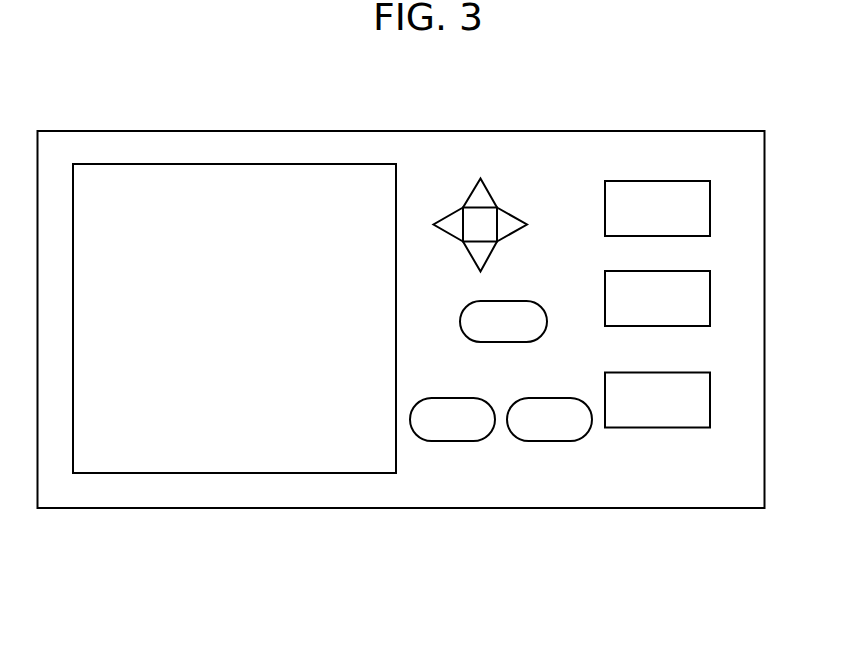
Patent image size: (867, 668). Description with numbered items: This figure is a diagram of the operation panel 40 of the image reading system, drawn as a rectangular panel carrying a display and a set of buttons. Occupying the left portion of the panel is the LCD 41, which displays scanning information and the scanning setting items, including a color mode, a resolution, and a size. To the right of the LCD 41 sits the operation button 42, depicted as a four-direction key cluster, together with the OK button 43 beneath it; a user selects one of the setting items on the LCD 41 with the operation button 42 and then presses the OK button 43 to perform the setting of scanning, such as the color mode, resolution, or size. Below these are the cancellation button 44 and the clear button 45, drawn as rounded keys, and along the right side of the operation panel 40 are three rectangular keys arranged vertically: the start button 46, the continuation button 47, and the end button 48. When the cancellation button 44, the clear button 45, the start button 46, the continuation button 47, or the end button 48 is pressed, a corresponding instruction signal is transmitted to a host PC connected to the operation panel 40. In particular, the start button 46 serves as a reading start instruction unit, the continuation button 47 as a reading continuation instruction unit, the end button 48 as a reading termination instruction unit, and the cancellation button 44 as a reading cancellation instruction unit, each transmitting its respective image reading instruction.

The operation panel 40 is at (710, 131).
The LCD 41 is at (338, 164).
The operation button 42 is at (463, 208).
The OK button 43 is at (525, 299).
The cancellation button 44 is at (452, 441).
The clear button 45 is at (552, 441).
The start button 46 is at (710, 205).
The continuation button 47 is at (710, 294).
The end button 48 is at (710, 396).